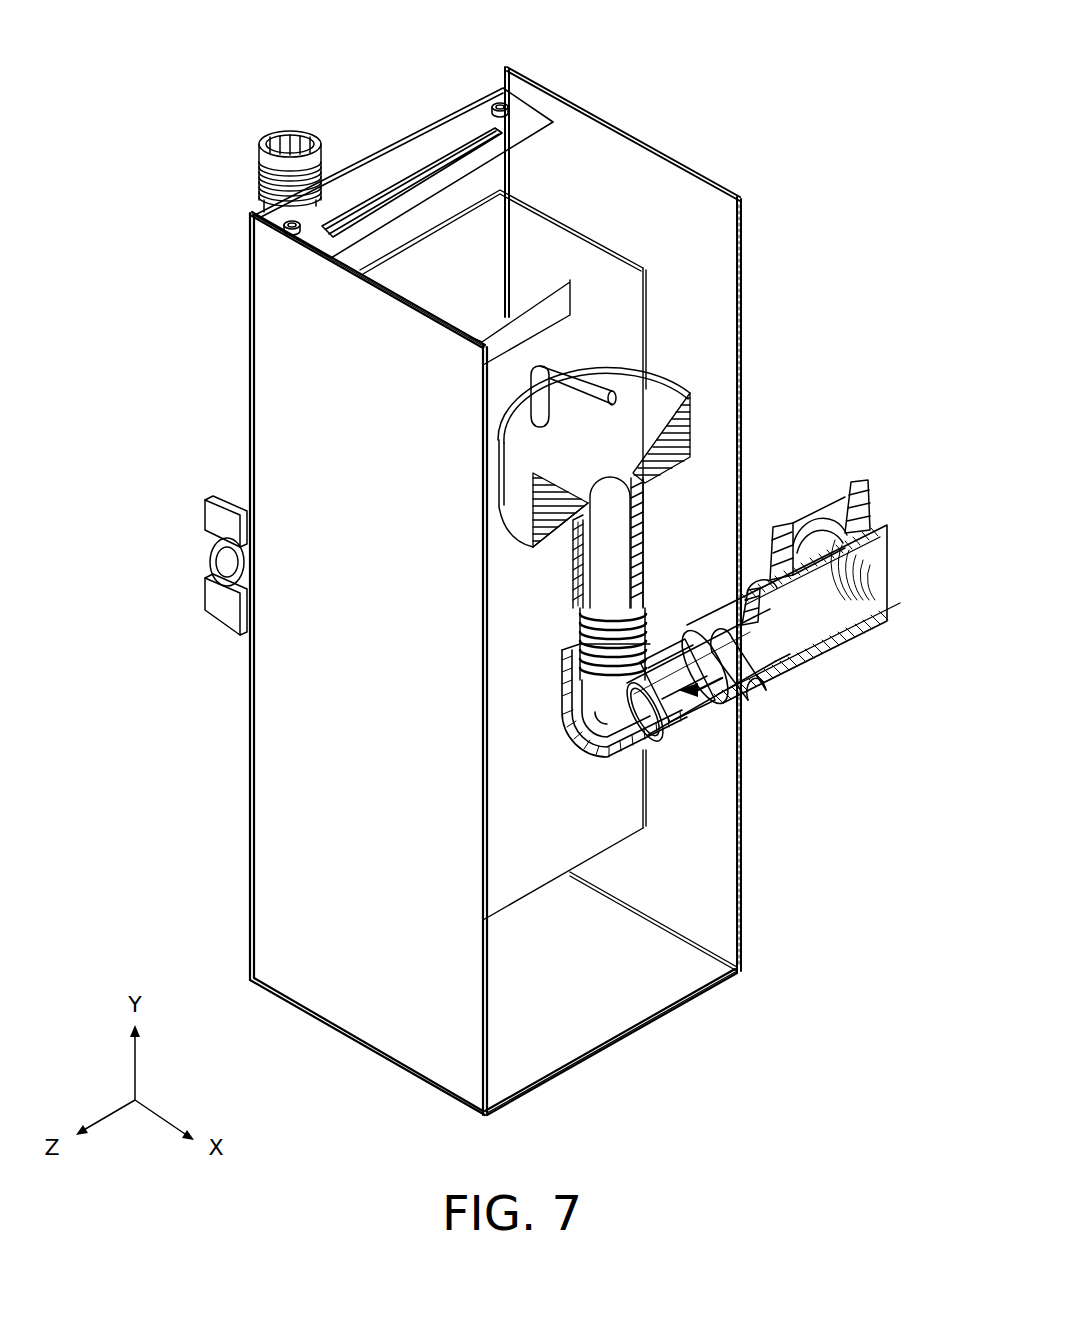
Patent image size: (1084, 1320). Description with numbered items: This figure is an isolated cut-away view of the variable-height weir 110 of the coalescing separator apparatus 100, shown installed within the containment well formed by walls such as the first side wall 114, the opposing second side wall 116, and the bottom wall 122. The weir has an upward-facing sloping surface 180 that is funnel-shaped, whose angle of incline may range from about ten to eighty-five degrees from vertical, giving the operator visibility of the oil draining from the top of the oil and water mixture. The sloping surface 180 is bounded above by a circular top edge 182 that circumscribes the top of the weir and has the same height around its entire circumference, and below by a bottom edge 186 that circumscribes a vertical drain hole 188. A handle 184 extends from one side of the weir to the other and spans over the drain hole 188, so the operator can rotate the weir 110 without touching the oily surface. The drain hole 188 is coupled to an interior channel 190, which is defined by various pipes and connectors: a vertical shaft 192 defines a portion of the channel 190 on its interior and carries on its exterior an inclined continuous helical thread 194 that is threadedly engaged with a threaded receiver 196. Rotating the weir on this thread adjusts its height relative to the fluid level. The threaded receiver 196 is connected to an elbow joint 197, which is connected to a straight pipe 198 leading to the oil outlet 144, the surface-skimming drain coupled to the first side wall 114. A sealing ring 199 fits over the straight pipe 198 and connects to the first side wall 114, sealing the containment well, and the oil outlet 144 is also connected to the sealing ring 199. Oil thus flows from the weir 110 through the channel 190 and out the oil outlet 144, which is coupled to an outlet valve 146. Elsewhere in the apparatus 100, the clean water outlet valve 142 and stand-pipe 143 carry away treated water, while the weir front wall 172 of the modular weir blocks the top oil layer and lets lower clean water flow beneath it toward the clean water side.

The coalescing separator apparatus 100 is at (812, 146).
The variable-height weir 110 is at (668, 332).
The first side wall 114 is at (742, 232).
The second side wall 116 is at (290, 380).
The bottom wall 122 is at (612, 1000).
The clean water outlet valve 142 is at (219, 530).
The stand-pipe 143 is at (250, 195).
The oil outlet 144 is at (840, 650).
The outlet valve 146 is at (864, 490).
The weir front wall 172 is at (537, 862).
The upward-facing sloping surface 180 is at (668, 378).
The top edge 182 is at (652, 418).
The handle 184 is at (563, 378).
The bottom edge 186 is at (620, 488).
The vertical drain hole 188 is at (605, 515).
The interior channel 190 is at (753, 692).
The vertical shaft 192 is at (573, 573).
The helical thread 194 is at (583, 580).
The threaded receiver 196 is at (575, 640).
The elbow joint 197 is at (625, 760).
The straight pipe 198 is at (678, 723).
The sealing ring 199 is at (757, 690).